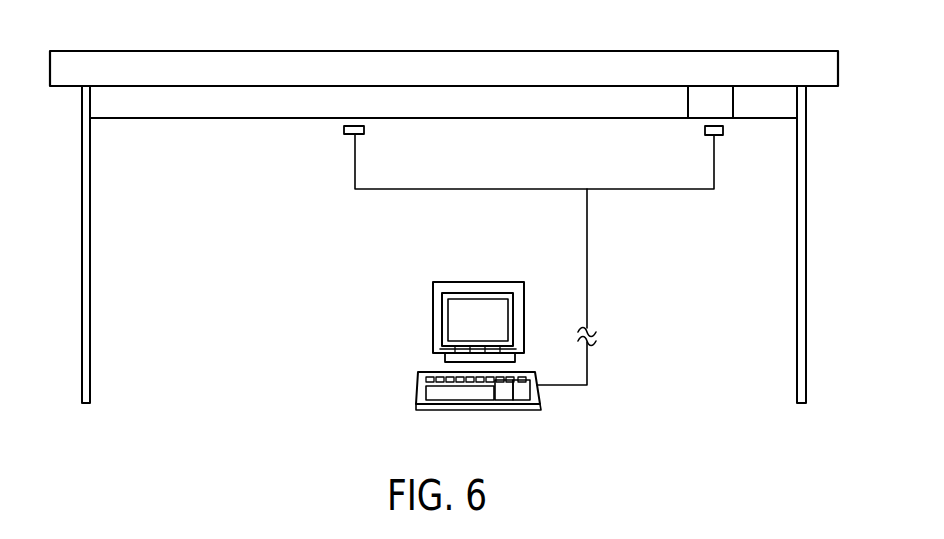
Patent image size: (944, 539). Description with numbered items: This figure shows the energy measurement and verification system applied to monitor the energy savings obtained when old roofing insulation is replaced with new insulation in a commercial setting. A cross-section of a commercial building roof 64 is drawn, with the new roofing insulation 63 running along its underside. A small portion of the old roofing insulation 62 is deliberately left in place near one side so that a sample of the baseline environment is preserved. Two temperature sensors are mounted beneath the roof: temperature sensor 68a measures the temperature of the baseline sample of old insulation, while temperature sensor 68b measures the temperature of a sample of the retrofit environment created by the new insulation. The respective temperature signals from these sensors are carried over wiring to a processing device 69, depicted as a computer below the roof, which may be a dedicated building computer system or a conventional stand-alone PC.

The commercial building roof 64 is at (174, 50).
The new roofing insulation 63 is at (118, 120).
The old roofing insulation 62 is at (731, 119).
The temperature sensor 68b is at (344, 135).
The temperature sensor 68a is at (714, 136).
The processing device 69 is at (515, 412).